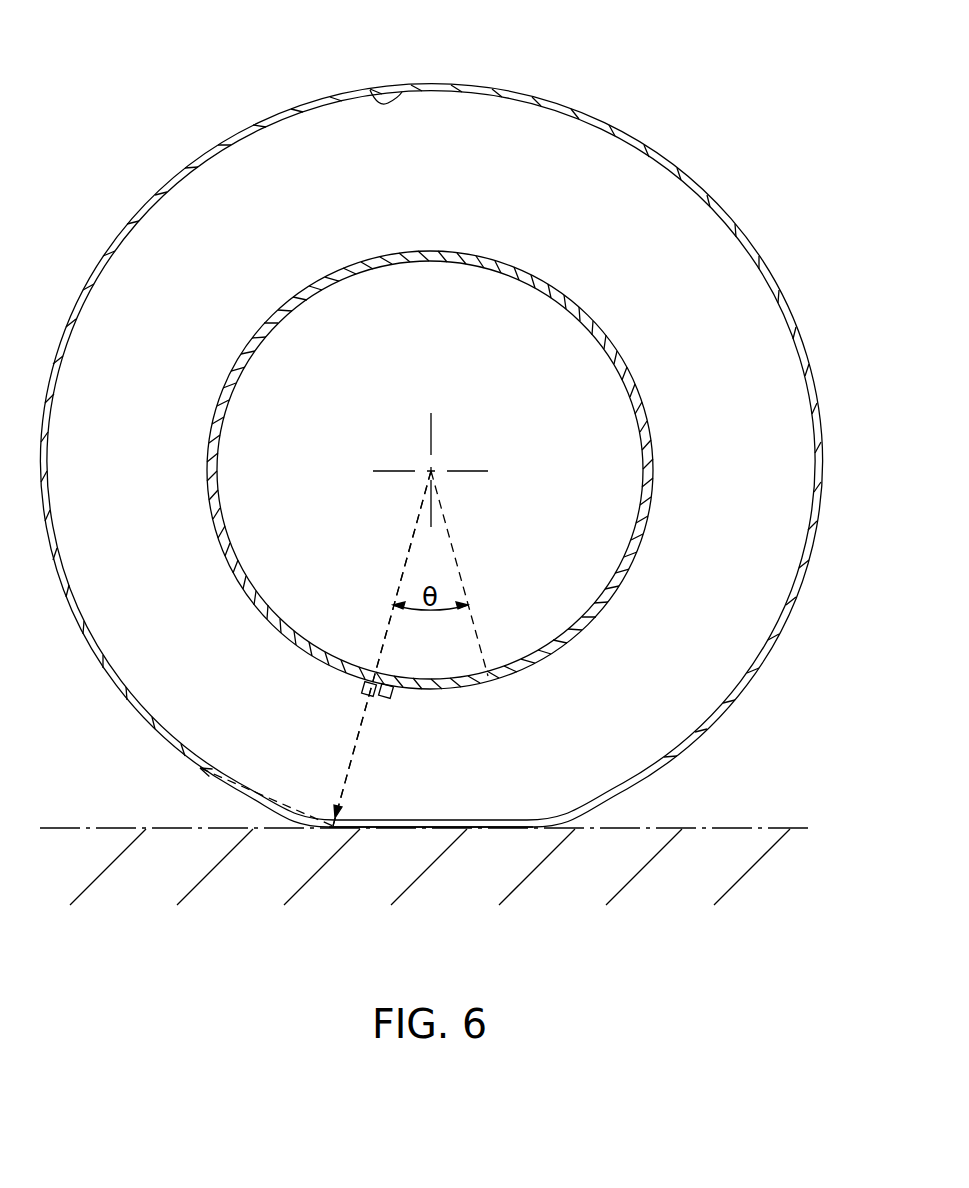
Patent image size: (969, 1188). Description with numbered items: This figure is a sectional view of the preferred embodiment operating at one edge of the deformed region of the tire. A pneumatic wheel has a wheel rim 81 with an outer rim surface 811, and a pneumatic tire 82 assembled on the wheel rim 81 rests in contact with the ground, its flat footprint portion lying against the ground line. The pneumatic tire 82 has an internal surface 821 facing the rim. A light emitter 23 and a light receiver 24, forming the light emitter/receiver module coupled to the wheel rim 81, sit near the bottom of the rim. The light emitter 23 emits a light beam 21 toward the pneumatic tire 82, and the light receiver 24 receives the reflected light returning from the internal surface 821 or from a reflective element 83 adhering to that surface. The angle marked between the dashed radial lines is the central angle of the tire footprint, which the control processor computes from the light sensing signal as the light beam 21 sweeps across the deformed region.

The pneumatic tire 82 is at (552, 103).
The internal surface 821 is at (370, 90).
The wheel rim 81 is at (238, 580).
The outer rim surface 811 is at (593, 320).
The reflective element 83 is at (375, 827).
The light emitter 23 is at (362, 688).
The light receiver 24 is at (386, 698).
The light beam 21 is at (353, 766).